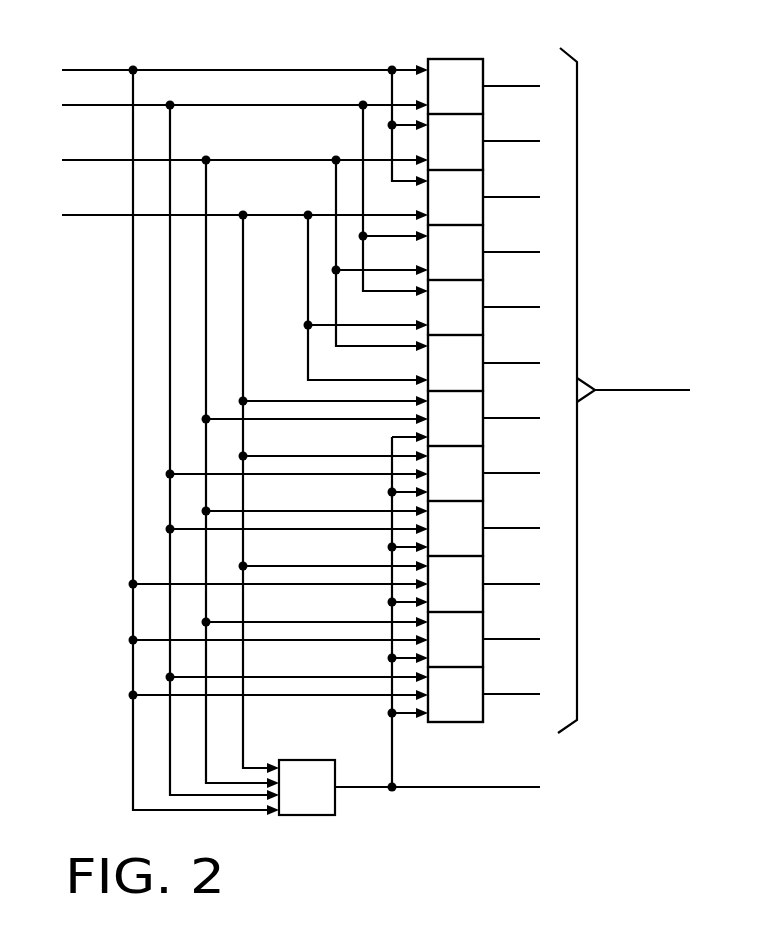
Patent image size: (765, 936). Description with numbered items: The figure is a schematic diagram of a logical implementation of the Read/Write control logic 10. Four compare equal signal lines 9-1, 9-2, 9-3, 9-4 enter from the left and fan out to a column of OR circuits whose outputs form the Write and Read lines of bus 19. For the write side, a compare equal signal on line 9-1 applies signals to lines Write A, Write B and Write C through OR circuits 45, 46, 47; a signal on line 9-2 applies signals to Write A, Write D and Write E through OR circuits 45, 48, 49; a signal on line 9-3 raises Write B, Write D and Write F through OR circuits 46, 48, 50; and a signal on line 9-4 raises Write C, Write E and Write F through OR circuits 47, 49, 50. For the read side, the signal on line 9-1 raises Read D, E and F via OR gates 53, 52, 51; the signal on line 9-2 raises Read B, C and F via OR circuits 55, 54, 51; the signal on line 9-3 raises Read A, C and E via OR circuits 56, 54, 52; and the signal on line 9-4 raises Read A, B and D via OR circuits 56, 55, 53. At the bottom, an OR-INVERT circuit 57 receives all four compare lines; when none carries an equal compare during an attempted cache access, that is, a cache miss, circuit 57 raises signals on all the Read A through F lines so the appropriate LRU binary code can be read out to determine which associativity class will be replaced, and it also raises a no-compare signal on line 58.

The Read/Write control logic 10 is at (478, 36).
The compare equal signal line 9-1 is at (373, 68).
The compare equal signal line 9-2 is at (299, 105).
The compare equal signal line 9-3 is at (291, 160).
The compare equal signal line 9-4 is at (128, 218).
The OR circuit 45 is at (465, 58).
The OR circuit 46 is at (486, 144).
The OR circuit 47 is at (486, 200).
The OR circuit 48 is at (486, 255).
The OR circuit 49 is at (486, 310).
The OR circuit 50 is at (486, 366).
The OR circuit 56 is at (486, 421).
The OR circuit 55 is at (486, 476).
The OR circuit 54 is at (486, 531).
The OR circuit 53 is at (486, 587).
The OR circuit 52 is at (486, 642).
The OR circuit 51 is at (486, 697).
The OR-INVERT circuit 57 is at (337, 817).
The line 58 is at (440, 788).
The bus 19 is at (624, 390).